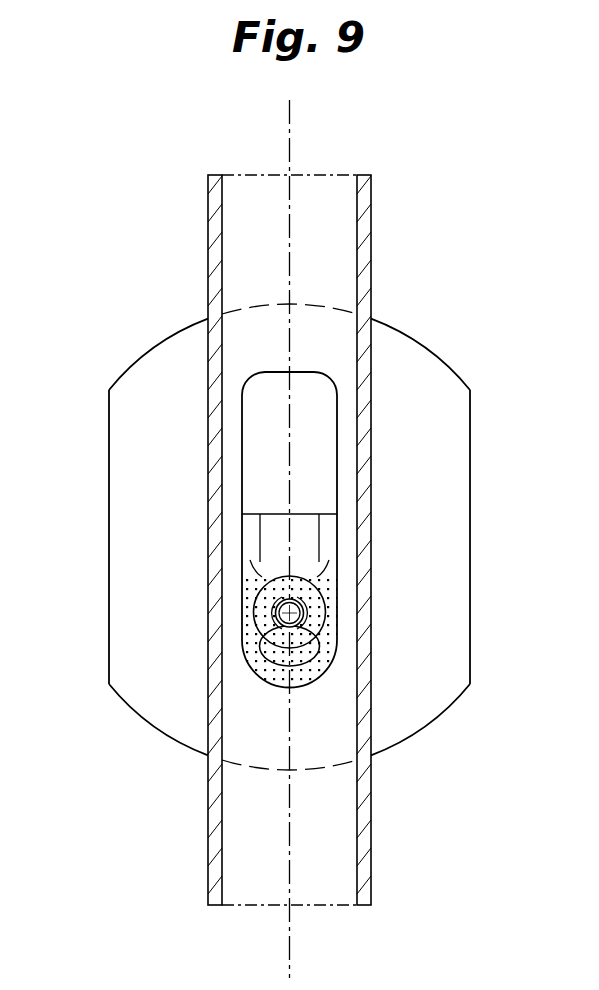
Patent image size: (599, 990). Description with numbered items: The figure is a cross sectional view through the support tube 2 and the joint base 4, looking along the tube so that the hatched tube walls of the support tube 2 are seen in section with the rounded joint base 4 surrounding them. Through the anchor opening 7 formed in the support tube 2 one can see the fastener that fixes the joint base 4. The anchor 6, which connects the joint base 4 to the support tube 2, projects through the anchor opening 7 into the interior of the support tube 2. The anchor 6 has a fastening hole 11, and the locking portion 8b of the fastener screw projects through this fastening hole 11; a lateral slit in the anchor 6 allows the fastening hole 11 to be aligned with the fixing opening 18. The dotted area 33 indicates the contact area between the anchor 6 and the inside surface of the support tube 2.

The support tube 2 is at (217, 877).
The joint base 4 is at (425, 727).
The anchor 6 is at (250, 658).
The anchor opening 7 is at (315, 464).
The locking portion 8b is at (272, 616).
The fastening hole 11 is at (275, 608).
The fixing opening 18 is at (318, 588).
The dotted area 33 is at (318, 663).